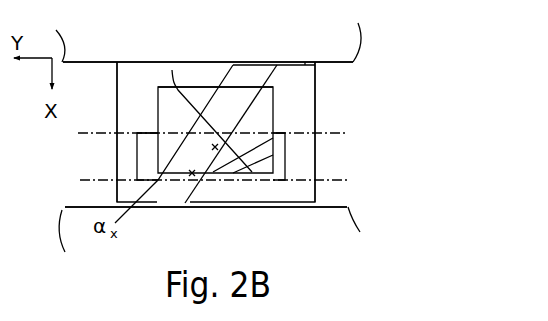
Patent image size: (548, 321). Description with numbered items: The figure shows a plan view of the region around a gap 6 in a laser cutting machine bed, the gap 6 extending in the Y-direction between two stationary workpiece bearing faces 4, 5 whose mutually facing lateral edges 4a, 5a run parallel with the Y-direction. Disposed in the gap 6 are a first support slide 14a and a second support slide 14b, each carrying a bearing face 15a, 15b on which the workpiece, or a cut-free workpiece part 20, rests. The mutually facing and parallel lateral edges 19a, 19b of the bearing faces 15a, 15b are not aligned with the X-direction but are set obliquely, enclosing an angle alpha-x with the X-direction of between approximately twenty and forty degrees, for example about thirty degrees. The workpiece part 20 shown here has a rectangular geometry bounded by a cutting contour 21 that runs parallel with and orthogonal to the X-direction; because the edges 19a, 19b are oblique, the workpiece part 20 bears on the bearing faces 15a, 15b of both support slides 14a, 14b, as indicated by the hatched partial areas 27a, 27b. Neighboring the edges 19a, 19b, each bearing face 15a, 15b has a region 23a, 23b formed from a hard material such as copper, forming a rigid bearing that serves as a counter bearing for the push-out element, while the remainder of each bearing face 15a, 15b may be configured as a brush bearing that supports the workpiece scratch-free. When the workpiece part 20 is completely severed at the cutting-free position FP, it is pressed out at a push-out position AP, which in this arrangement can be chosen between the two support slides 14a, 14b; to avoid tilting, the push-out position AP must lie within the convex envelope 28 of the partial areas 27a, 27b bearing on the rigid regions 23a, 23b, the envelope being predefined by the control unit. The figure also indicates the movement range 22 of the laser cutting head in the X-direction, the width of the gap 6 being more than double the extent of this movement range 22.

The stationary workpiece bearing face 4 is at (63, 45).
The lateral edge 4a is at (107, 63).
The stationary workpiece bearing face 5 is at (75, 232).
The lateral edge 5a is at (95, 206).
The gap 6 is at (203, 87).
The first support slide 14a is at (108, 126).
The second support slide 14b is at (323, 160).
The bearing face 15a is at (133, 78).
The bearing face 15b is at (302, 70).
The lateral edge 19a is at (170, 190).
The lateral edge 19b is at (258, 73).
The workpiece part 20 is at (219, 108).
The cutting contour 21 is at (219, 190).
The movement range 22 is at (350, 154).
The region forming a rigid bearing 23a is at (142, 135).
The region forming a rigid bearing 23b is at (286, 160).
The partial area 27a is at (143, 146).
The partial area 27b is at (293, 188).
The convex envelope 28 is at (172, 70).
The push-out position AP is at (260, 188).
The cutting-free position FP is at (203, 190).